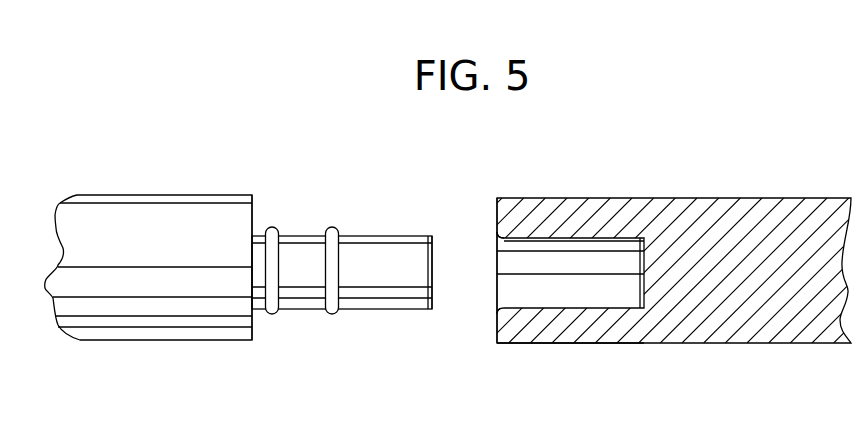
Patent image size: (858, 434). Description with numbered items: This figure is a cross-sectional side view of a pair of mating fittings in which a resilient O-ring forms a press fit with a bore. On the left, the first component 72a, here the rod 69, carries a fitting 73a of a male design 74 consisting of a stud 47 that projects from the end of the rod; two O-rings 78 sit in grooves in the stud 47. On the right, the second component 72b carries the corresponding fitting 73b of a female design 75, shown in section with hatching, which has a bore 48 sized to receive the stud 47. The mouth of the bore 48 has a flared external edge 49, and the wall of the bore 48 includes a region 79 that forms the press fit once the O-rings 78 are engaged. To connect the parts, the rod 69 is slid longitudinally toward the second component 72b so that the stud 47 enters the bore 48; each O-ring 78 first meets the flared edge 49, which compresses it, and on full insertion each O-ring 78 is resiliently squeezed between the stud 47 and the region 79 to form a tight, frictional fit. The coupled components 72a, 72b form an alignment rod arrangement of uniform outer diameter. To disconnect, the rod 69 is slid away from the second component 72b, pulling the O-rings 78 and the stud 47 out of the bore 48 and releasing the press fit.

The rod 69 is at (138, 217).
The first component 72a is at (198, 218).
The second component 72b is at (680, 237).
The fitting 73a is at (334, 190).
The fitting 73b is at (476, 211).
The male design 74 is at (238, 249).
The female design 75 is at (607, 260).
The O-ring 78 is at (327, 230).
The stud 47 is at (350, 283).
The bore 48 is at (607, 282).
The flared external edge 49 is at (497, 237).
The region 79 is at (548, 320).